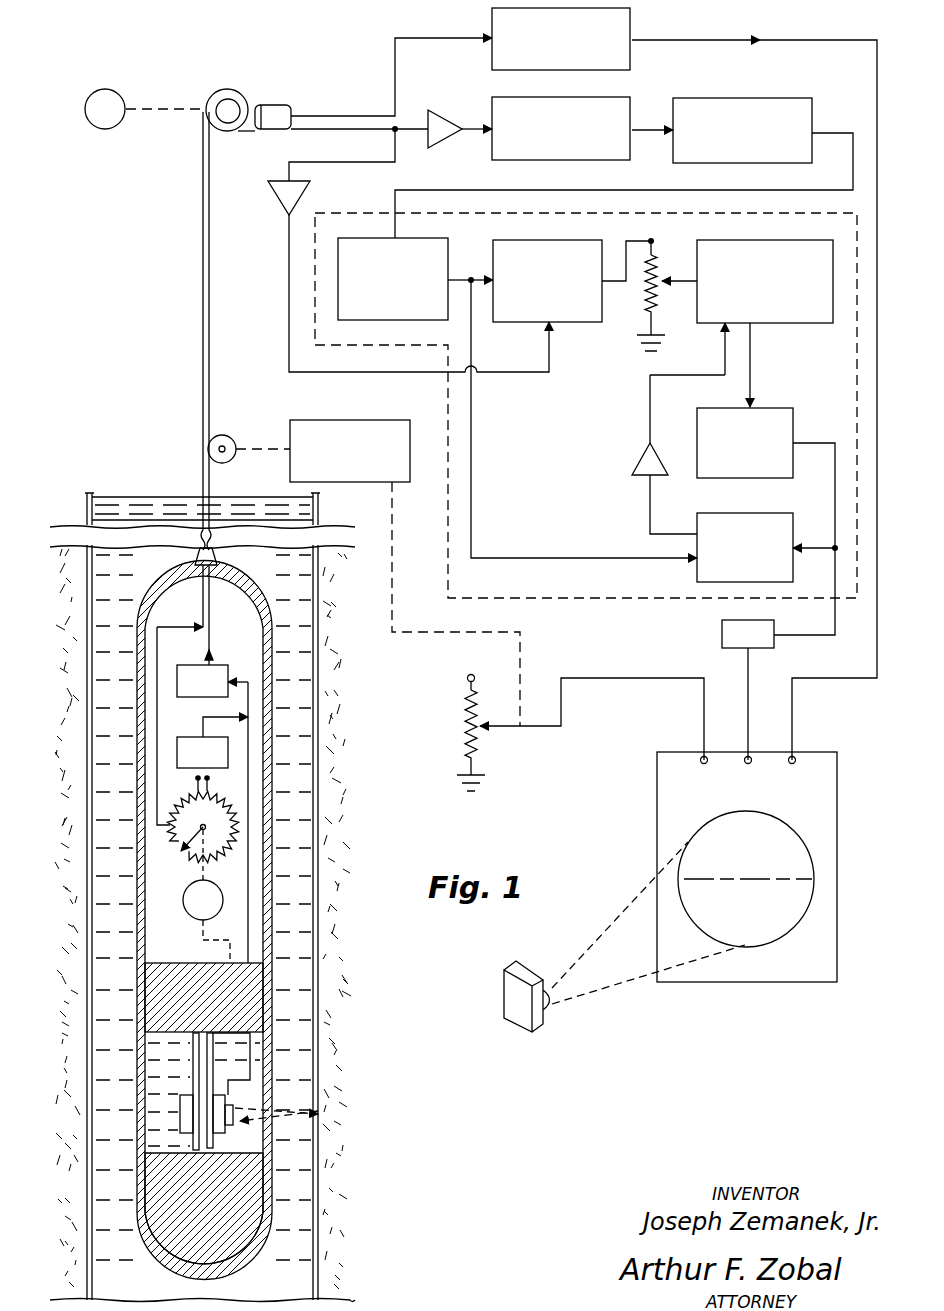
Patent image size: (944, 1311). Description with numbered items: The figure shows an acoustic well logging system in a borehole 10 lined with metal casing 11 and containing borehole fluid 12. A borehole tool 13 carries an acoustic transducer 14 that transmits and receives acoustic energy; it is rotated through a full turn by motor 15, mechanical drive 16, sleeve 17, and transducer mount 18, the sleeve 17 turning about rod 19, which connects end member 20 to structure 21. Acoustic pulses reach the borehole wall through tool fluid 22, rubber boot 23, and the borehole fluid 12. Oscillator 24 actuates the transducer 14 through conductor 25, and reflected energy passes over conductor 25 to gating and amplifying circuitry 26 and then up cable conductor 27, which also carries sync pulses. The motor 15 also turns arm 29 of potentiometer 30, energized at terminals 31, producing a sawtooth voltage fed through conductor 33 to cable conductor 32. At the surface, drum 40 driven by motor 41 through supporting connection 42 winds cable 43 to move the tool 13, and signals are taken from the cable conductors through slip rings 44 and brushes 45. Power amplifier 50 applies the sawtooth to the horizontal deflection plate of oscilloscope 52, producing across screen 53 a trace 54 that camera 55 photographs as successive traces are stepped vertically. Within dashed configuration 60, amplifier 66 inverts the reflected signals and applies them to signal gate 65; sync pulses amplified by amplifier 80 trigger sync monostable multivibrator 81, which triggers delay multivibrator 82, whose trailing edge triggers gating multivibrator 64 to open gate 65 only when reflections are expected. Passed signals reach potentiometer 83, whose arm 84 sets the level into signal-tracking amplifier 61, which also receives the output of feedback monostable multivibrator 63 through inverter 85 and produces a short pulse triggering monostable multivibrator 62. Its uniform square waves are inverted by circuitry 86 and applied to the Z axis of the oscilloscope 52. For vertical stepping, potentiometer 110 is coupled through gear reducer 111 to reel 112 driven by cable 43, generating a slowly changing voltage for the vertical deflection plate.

The borehole 10 is at (158, 497).
The metal casing 11 is at (97, 490).
The borehole fluid 12 is at (132, 588).
The borehole tool 13 is at (266, 588).
The acoustic transducer 14 is at (236, 1122).
The motor 15 is at (184, 914).
The mechanical drive 16 is at (200, 940).
The sleeve 17 is at (184, 1056).
The transducer mount 18 is at (178, 1100).
The rod 19 is at (145, 1148).
The end member 20 is at (160, 1262).
The structure 21 is at (145, 980).
The tool fluid 22 is at (160, 1108).
The rubber boot 23 is at (254, 1076).
The oscillator 24 is at (194, 737).
The conductor 25 is at (250, 868).
The gating and amplifying circuitry 26 is at (218, 665).
The cable conductor 27 is at (212, 617).
The potentiometer arm 29 is at (176, 844).
The potentiometer 30 is at (190, 866).
The potentiometer terminals 31 is at (194, 778).
The cable conductor 32 is at (202, 596).
The conductor 33 is at (158, 654).
The drum 40 is at (232, 90).
The motor 41 is at (110, 89).
The supporting connection 42 is at (160, 104).
The cable 43 is at (202, 306).
The slip rings 44 is at (260, 107).
The brushes 45 is at (236, 131).
The power amplifier 50 is at (492, 62).
The oscilloscope 52 is at (756, 982).
The screen 53 is at (825, 912).
The trace 54 is at (760, 879).
The camera 55 is at (506, 1004).
The dashed configuration 60 is at (372, 212).
The signal-tracking amplifier 61 is at (784, 240).
The monostable multivibrator 62 is at (780, 408).
The feedback monostable multivibrator 63 is at (754, 512).
The gating multivibrator 64 is at (418, 238).
The signal gate 65 is at (529, 240).
The amplifier 66 is at (270, 202).
The amplifier 80 is at (450, 143).
The sync monostable multivibrator 81 is at (634, 104).
The delay multivibrator 82 is at (736, 98).
The potentiometer 83 is at (644, 290).
The potentiometer arm 84 is at (670, 278).
The inverter 85 is at (636, 460).
The inverting circuitry 86 is at (722, 632).
The potentiometer 110 is at (462, 741).
The gear reducer 111 is at (366, 420).
The reel 112 is at (232, 436).